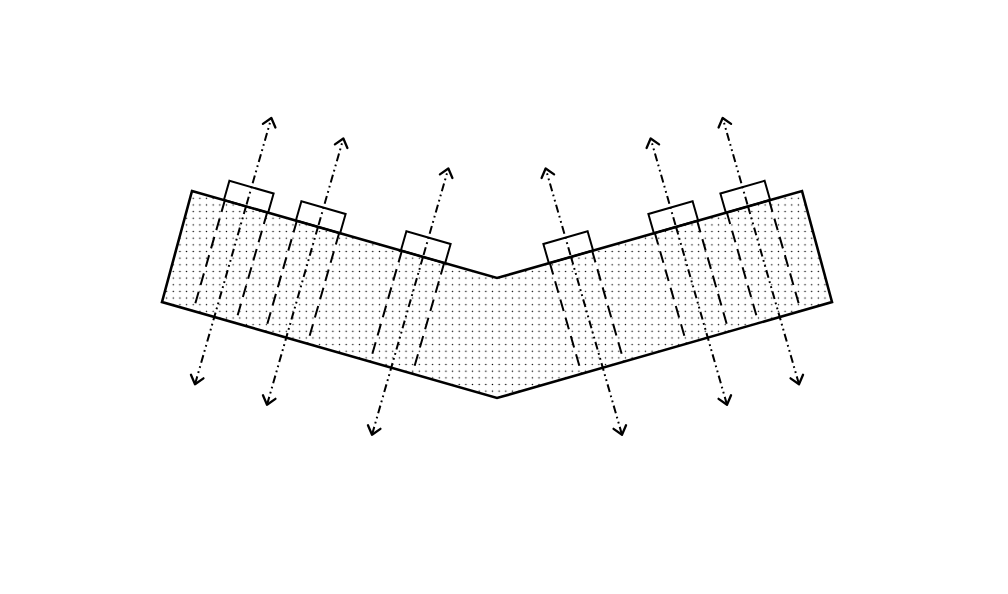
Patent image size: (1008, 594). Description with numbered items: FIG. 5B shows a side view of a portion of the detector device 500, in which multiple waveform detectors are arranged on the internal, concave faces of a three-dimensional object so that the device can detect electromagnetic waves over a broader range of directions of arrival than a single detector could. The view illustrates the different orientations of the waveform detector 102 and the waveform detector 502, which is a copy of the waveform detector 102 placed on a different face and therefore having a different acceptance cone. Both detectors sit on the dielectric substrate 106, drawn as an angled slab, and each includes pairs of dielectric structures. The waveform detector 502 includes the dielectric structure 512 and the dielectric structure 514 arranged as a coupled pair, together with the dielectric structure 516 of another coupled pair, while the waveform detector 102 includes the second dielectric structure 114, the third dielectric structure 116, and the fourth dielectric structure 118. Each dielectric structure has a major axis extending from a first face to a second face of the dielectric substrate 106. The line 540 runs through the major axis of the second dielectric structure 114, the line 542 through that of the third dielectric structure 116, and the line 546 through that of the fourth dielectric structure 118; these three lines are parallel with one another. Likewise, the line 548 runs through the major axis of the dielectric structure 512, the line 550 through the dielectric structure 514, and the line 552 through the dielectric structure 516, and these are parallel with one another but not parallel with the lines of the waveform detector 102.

The detector device 500 is at (167, 104).
The waveform detector 102 is at (777, 421).
The waveform detector 502 is at (244, 431).
The dielectric substrate 106 is at (513, 364).
The dielectric structure 516 is at (258, 185).
The dielectric structure 514 is at (343, 210).
The dielectric structure 512 is at (440, 236).
The fourth dielectric structure 118 is at (563, 238).
The third dielectric structure 116 is at (663, 210).
The second dielectric structure 114 is at (762, 180).
The line 552 is at (206, 338).
The line 550 is at (283, 358).
The line 548 is at (377, 419).
The line 546 is at (607, 390).
The line 542 is at (715, 383).
The line 540 is at (790, 353).